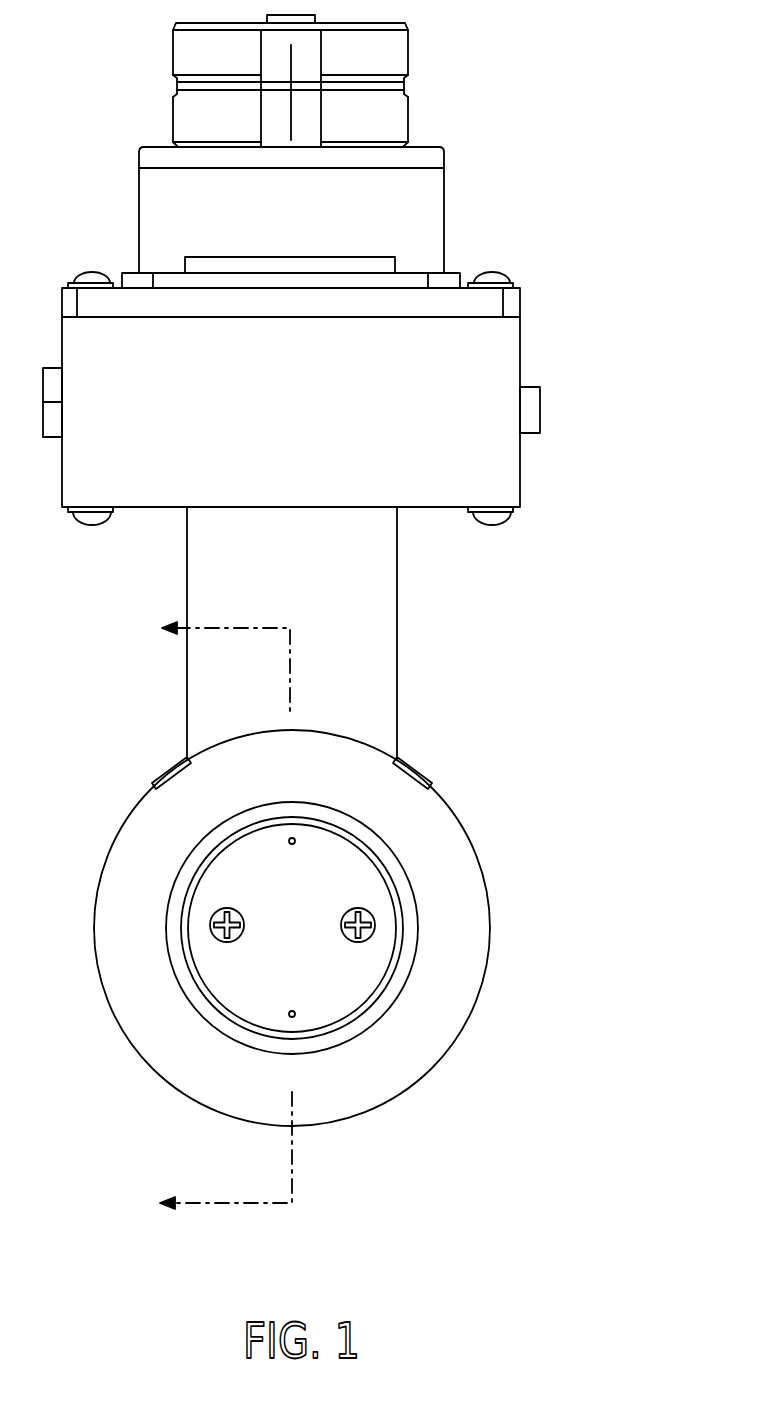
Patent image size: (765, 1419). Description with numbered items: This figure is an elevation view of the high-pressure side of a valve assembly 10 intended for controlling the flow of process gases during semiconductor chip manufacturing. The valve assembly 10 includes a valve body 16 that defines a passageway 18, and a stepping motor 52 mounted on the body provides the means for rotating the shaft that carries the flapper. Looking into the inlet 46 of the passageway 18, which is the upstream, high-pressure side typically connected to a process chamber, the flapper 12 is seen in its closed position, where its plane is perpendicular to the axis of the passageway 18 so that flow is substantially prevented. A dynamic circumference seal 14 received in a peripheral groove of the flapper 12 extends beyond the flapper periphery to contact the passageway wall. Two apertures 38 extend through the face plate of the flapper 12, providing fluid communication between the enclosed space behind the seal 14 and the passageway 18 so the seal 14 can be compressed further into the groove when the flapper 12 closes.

The valve assembly 10 is at (336, 620).
The stepping motor 52 is at (445, 256).
The valve body 16 is at (403, 658).
The flapper 12 is at (362, 992).
The seal 14 is at (405, 913).
The inlet 46 is at (360, 819).
The passageway 18 is at (388, 893).
The aperture 38 is at (289, 841).